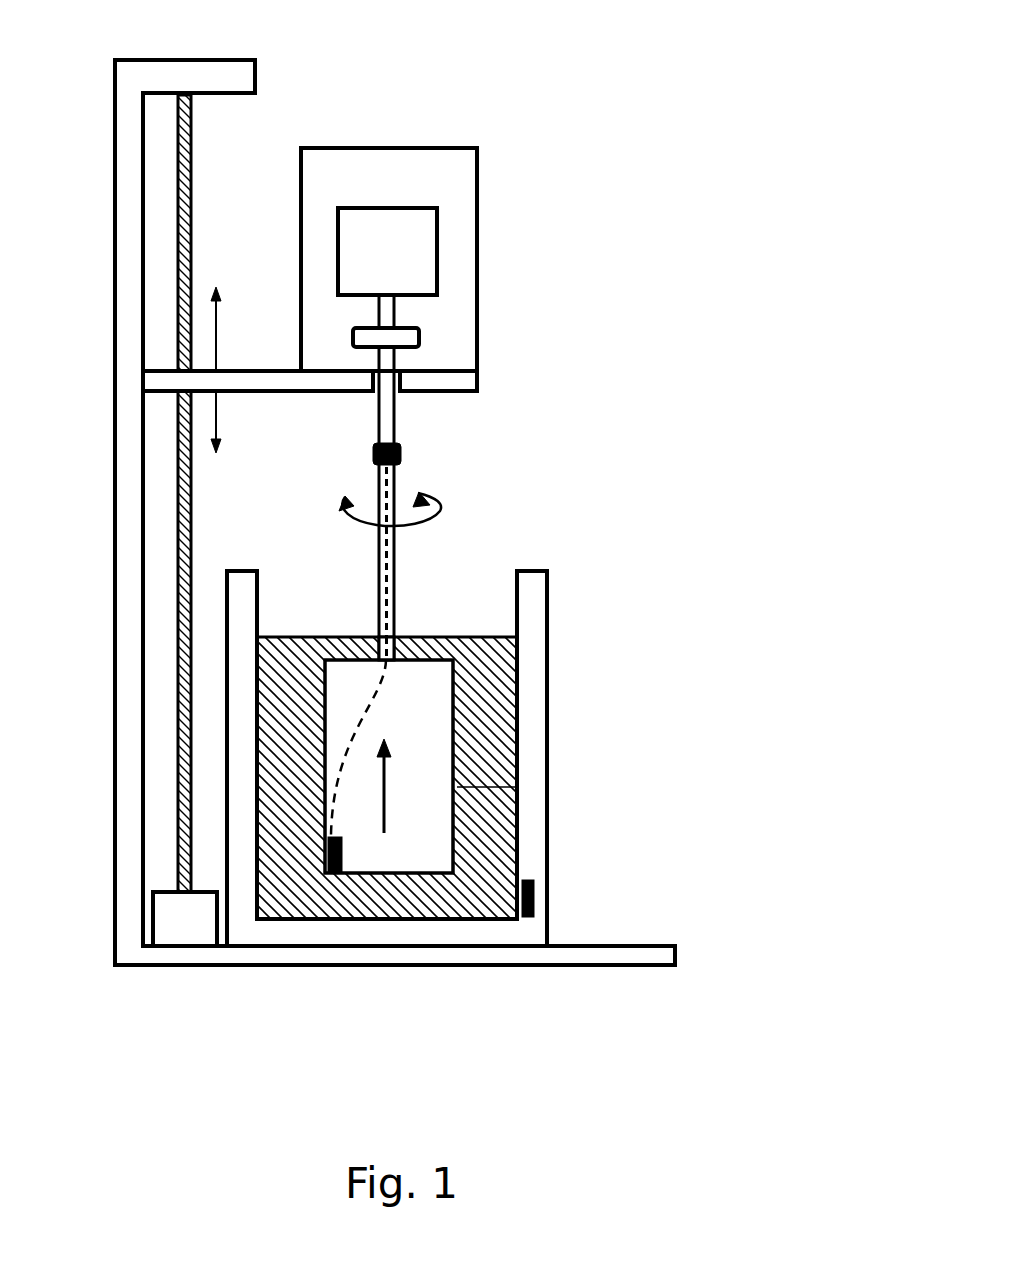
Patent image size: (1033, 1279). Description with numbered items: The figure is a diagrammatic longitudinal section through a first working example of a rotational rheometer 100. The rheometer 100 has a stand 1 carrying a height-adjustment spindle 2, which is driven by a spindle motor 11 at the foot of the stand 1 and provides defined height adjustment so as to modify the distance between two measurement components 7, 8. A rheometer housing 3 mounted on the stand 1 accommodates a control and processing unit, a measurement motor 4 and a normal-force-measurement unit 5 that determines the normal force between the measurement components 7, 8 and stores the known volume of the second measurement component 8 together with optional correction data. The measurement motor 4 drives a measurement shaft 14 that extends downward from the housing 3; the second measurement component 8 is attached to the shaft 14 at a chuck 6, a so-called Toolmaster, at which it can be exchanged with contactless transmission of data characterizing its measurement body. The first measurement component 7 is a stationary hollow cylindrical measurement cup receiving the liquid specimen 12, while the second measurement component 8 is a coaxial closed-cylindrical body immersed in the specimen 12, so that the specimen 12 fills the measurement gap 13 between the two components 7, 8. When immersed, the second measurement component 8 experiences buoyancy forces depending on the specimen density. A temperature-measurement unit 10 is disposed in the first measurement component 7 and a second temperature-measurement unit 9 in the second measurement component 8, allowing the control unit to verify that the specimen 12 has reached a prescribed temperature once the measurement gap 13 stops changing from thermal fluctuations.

The rheometer 100 is at (655, 92).
The stand 1 is at (131, 942).
The height-adjustment spindle 2 is at (186, 192).
The rheometer housing 3 is at (478, 185).
The measurement motor 4 is at (403, 277).
The normal-force-measurement unit 5 is at (390, 338).
The chuck 6 is at (402, 453).
The first measurement component 7 is at (533, 675).
The second measurement component 8 is at (407, 702).
The second temperature-measurement unit 9 is at (345, 862).
The temperature-measurement unit 10 is at (535, 905).
The spindle motor 11 is at (190, 927).
The specimen 12 is at (461, 630).
The measurement gap 13 is at (517, 778).
The measurement shaft 14 is at (380, 563).